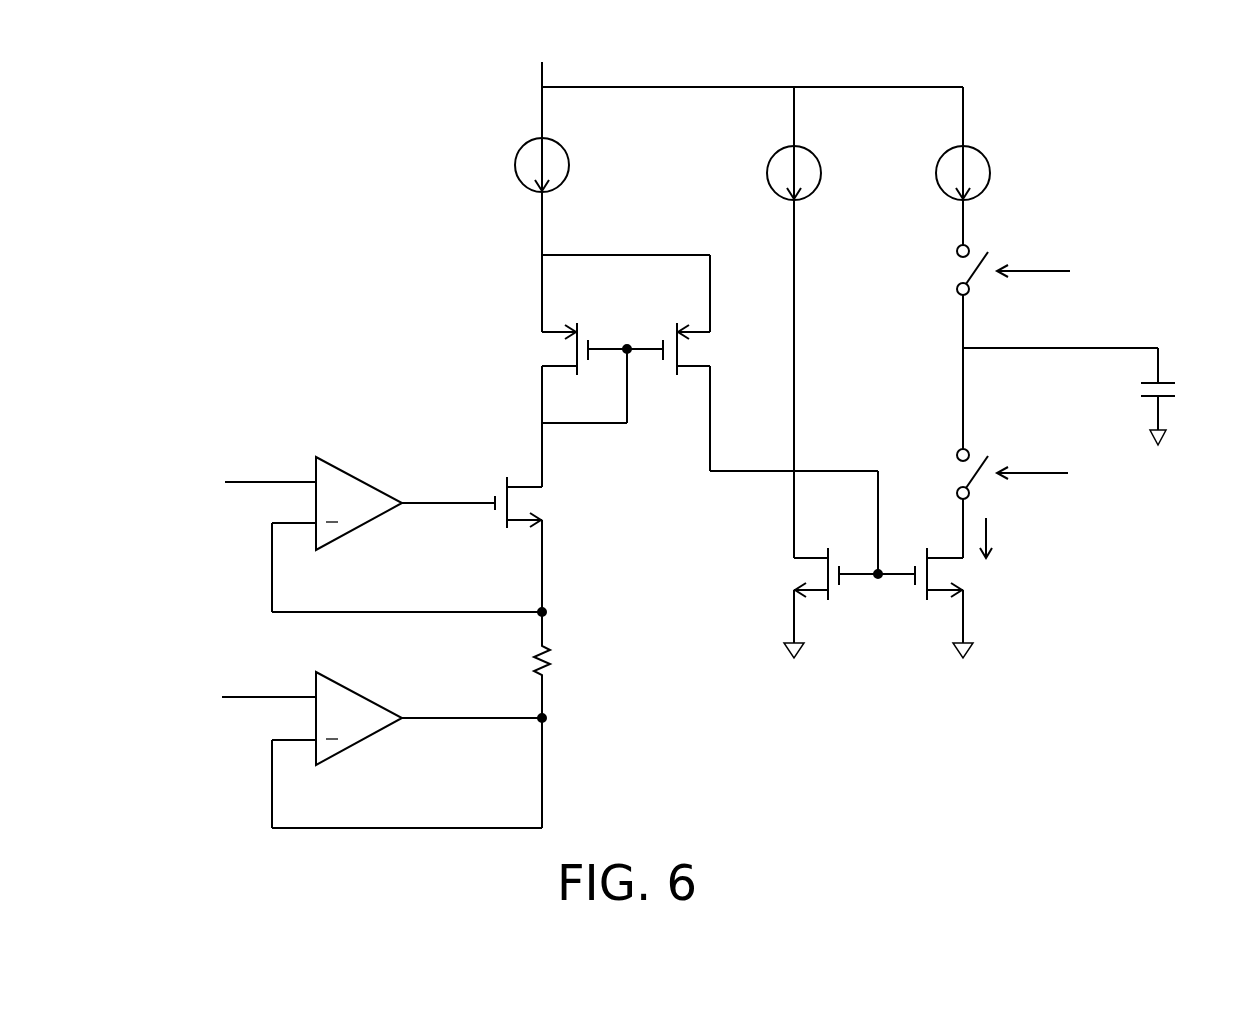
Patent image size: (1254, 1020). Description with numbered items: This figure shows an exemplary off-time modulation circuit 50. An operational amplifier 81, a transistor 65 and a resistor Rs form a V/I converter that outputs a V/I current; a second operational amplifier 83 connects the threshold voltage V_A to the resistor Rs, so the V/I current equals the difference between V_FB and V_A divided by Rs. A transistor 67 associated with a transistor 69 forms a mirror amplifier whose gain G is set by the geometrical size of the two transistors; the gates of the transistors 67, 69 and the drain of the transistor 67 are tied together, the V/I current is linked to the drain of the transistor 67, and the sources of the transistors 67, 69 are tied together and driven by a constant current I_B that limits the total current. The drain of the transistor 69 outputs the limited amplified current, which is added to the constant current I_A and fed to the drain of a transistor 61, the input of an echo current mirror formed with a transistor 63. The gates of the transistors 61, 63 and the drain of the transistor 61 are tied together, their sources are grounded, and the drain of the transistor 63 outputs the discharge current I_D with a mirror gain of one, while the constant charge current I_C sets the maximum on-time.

The current sensing circuit 50 is at (1186, 123).
The transistor 61 is at (795, 582).
The transistor 63 is at (964, 578).
The transistor 65 is at (542, 508).
The transistor 67 is at (543, 342).
The transistor 69 is at (712, 338).
The operational amplifier 81 is at (364, 527).
The operational amplifier 83 is at (354, 748).